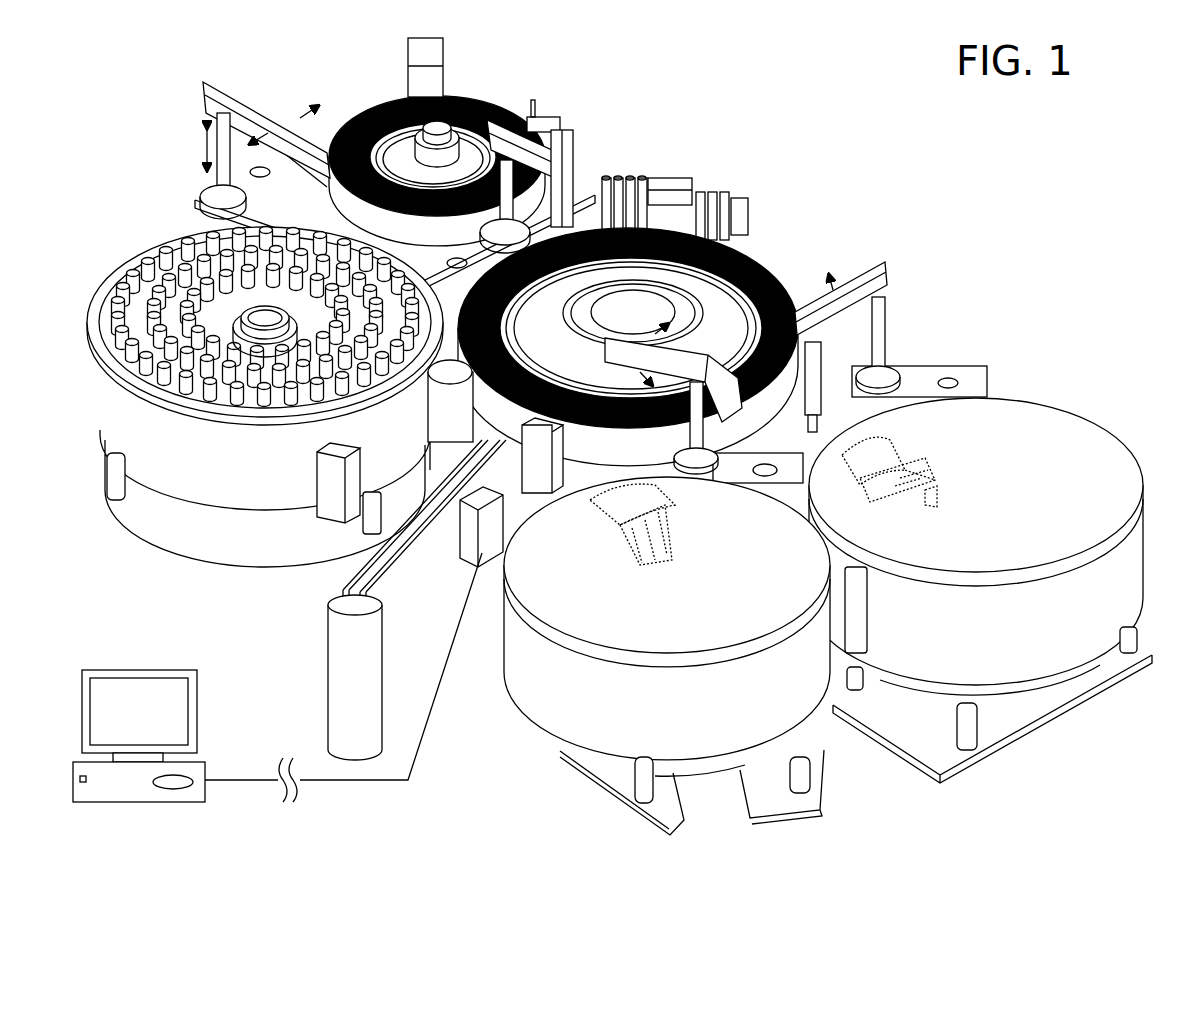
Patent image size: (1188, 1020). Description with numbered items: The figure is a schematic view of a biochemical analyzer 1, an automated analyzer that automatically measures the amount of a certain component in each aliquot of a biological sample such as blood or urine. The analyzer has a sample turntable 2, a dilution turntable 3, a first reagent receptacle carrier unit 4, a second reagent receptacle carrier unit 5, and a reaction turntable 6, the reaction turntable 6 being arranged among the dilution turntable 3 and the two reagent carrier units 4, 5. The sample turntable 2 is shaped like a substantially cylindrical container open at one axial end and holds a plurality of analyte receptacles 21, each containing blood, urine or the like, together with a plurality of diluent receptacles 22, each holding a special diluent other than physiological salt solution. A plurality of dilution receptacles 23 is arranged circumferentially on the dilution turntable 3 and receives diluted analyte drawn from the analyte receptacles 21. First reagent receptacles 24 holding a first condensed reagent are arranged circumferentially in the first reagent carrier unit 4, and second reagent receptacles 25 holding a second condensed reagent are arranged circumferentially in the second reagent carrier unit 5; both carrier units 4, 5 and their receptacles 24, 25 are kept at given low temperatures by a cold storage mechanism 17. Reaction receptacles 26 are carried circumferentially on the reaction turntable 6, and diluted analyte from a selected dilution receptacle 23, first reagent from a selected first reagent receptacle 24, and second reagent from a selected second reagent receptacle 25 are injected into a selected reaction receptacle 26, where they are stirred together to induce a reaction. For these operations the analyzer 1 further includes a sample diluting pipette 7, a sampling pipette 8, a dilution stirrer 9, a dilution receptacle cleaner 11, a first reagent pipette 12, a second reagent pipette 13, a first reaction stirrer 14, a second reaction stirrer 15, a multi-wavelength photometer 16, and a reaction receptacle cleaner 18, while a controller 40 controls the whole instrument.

The biochemical analyzer 1 is at (617, 436).
The sample turntable 2 is at (110, 397).
The dilution turntable 3 is at (368, 108).
The first reagent receptacle carrier unit 4 is at (518, 666).
The second reagent receptacle carrier unit 5 is at (1128, 553).
The reaction turntable 6 is at (760, 273).
The sample diluting pipette 7 is at (230, 88).
The sampling pipette 8 is at (572, 142).
The dilution stirrer 9 is at (443, 52).
The dilution receptacle cleaner 11 is at (533, 117).
The first reagent pipette 12 is at (662, 318).
The second reagent pipette 13 is at (885, 262).
The first reaction stirrer 14 is at (782, 430).
The second reaction stirrer 15 is at (813, 268).
The multi-wavelength photometer 16 is at (462, 562).
The cold storage mechanism 17 is at (370, 676).
The reaction receptacle cleaner 18 is at (650, 185).
The analyte receptacles 21 is at (117, 267).
The diluent receptacles 22 is at (155, 252).
The dilution receptacles 23 is at (463, 120).
The first reagent receptacles 24 is at (630, 533).
The second reagent receptacles 25 is at (917, 457).
The reaction receptacles 26 is at (793, 273).
The controller 40 is at (118, 670).